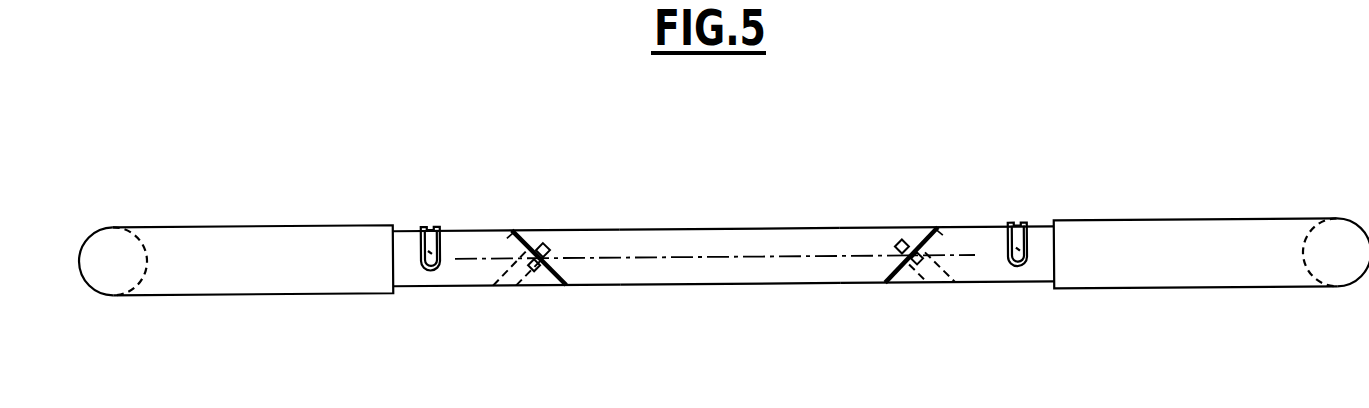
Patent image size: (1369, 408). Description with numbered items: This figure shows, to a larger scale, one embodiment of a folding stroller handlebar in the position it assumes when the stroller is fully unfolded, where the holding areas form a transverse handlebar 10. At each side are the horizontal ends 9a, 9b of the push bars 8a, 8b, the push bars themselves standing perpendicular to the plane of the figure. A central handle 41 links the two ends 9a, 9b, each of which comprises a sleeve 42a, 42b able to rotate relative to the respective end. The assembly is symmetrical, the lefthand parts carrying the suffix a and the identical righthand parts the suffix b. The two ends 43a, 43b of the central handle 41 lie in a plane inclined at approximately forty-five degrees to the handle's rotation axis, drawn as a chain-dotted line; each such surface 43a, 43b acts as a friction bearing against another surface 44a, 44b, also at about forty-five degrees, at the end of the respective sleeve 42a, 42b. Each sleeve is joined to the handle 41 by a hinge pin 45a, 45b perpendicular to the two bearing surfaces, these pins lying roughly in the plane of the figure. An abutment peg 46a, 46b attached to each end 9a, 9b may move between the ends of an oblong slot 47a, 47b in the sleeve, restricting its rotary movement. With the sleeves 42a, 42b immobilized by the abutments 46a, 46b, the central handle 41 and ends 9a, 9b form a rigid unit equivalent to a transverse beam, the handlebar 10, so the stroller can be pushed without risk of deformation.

The push bar 8a is at (111, 244).
The horizontal end of push bar 9a is at (242, 244).
The oblong slot 47a is at (430, 251).
The abutment peg 46a is at (427, 224).
The sleeve 42a is at (482, 242).
The end of central handle / bearing surface 43a is at (514, 229).
The central handle 41 is at (706, 240).
The transverse handlebar 10 is at (803, 205).
The end of central handle / bearing surface 43b is at (925, 232).
The sleeve 42b is at (974, 242).
The abutment peg 46b is at (1022, 225).
The oblong slot 47b is at (1018, 252).
The horizontal end of push bar 9b is at (1206, 246).
The push bar 8b is at (1338, 247).
The hinge pin 45a is at (508, 285).
The bearing surface of sleeve 44a is at (547, 285).
The bearing surface of sleeve 44b is at (898, 285).
The hinge pin 45b is at (927, 285).